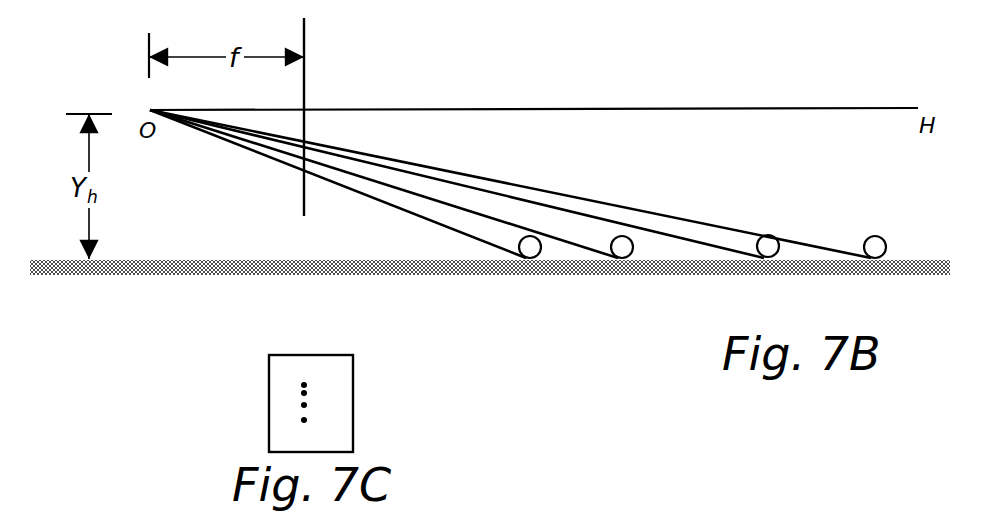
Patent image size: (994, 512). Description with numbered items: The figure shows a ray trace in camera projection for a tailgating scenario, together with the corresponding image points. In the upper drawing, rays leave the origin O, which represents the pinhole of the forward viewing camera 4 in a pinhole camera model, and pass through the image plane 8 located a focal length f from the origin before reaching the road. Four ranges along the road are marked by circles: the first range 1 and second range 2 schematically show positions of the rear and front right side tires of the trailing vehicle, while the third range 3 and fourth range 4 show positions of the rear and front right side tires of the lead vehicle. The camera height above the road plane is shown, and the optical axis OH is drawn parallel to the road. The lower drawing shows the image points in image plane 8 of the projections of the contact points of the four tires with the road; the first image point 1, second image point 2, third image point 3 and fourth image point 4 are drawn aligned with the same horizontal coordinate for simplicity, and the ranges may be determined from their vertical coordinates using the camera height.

In FIG. 7B, the image plane 8 is at (306, 26).
In FIG. 7C, the image plane 8 is at (354, 392).
In FIG. 7B, the object point at distance Z1 and its image point y1 1 is at (534, 269).
In FIG. 7C, the object point at distance Z1 and its image point y1 1 is at (304, 420).
In FIG. 7B, the object point at distance Z2 and its image point y2 2 is at (625, 269).
In FIG. 7C, the object point at distance Z2 and its image point y2 2 is at (304, 405).
In FIG. 7B, the object point at distance Z3 and its image point y3 3 is at (770, 268).
In FIG. 7C, the object point at distance Z3 and its image point y3 3 is at (304, 393).
In FIG. 7B, the object point at distance Z4 and its image point y4 4 is at (878, 268).
In FIG. 7C, the object point at distance Z4 and its image point y4 4 is at (304, 385).